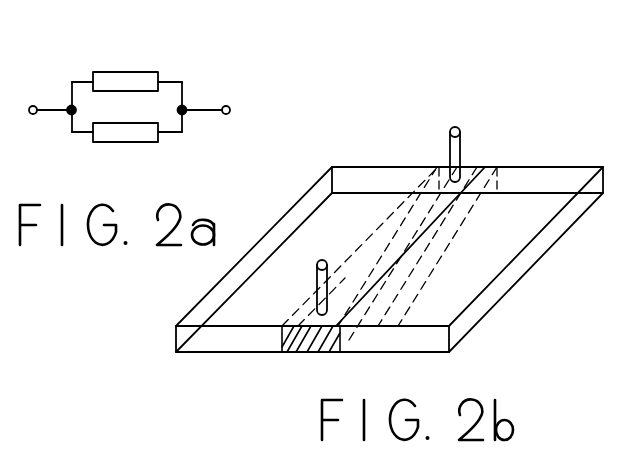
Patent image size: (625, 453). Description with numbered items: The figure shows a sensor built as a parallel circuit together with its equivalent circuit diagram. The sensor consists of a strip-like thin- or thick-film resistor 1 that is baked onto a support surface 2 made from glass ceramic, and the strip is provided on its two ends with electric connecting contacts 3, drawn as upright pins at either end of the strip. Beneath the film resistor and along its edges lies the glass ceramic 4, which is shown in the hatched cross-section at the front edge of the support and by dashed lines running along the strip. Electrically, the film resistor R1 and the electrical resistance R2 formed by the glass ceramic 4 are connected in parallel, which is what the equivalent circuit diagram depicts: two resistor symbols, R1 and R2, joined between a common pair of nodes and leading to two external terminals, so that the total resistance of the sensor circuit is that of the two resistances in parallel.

In FIG. 2A, the film resistor R1 is at (125, 80).
In FIG. 2A, the electrical resistance R2 is at (122, 134).
In FIG. 2B, the film resistor 1 is at (388, 256).
In FIG. 2B, the support surface 2 is at (450, 297).
In FIG. 2B, the electric connecting contacts 3 is at (317, 284).
In FIG. 2B, the glass ceramic 4 is at (309, 347).